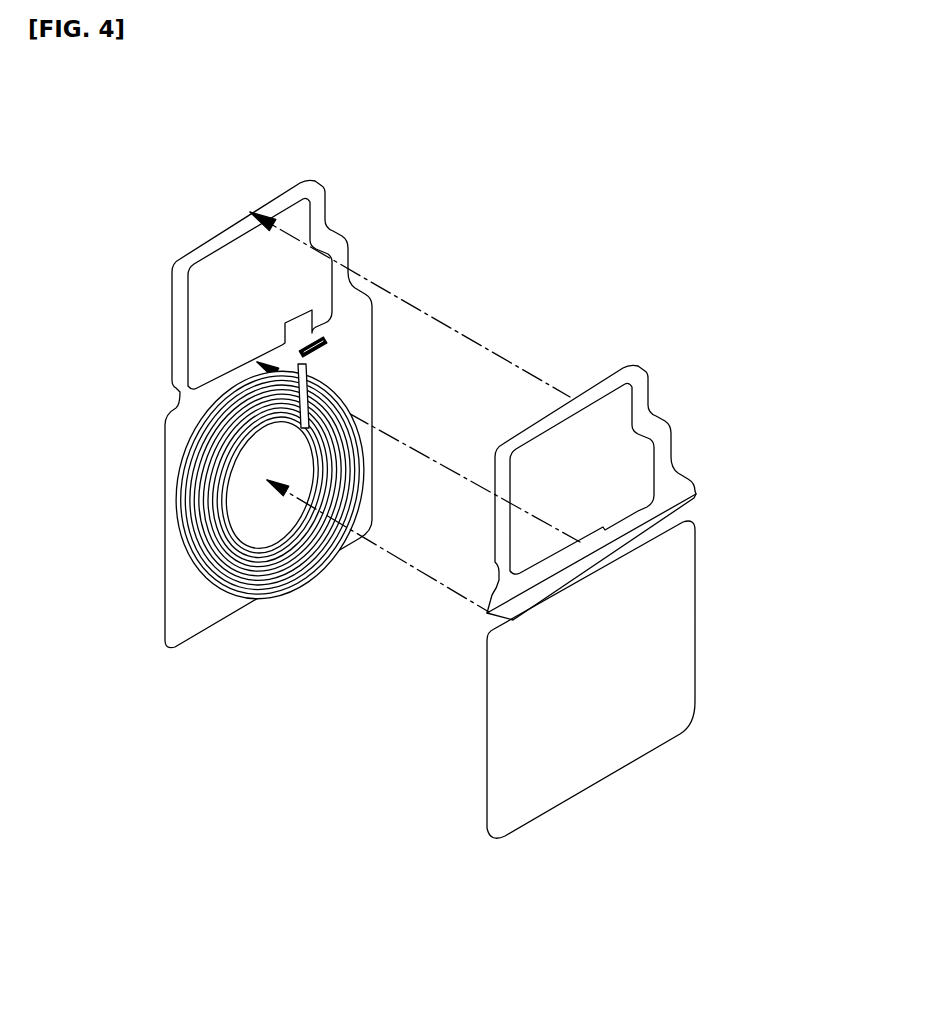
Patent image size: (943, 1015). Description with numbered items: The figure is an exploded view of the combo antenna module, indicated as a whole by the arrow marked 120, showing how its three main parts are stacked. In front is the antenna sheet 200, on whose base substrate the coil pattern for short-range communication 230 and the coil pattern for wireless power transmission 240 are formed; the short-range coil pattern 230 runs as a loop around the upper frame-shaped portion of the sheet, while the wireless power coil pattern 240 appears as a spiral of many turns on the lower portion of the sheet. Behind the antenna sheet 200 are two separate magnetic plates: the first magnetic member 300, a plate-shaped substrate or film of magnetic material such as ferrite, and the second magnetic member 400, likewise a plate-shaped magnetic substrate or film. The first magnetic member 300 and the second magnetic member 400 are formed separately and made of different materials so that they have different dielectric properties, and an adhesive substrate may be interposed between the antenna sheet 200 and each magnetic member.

The antenna module 120 is at (695, 222).
The antenna sheet 200 is at (194, 240).
The coil pattern for short-range communication 230 is at (333, 346).
The coil pattern for wireless power transmission 240 is at (193, 463).
The first magnetic member 300 is at (665, 420).
The second magnetic member 400 is at (695, 613).